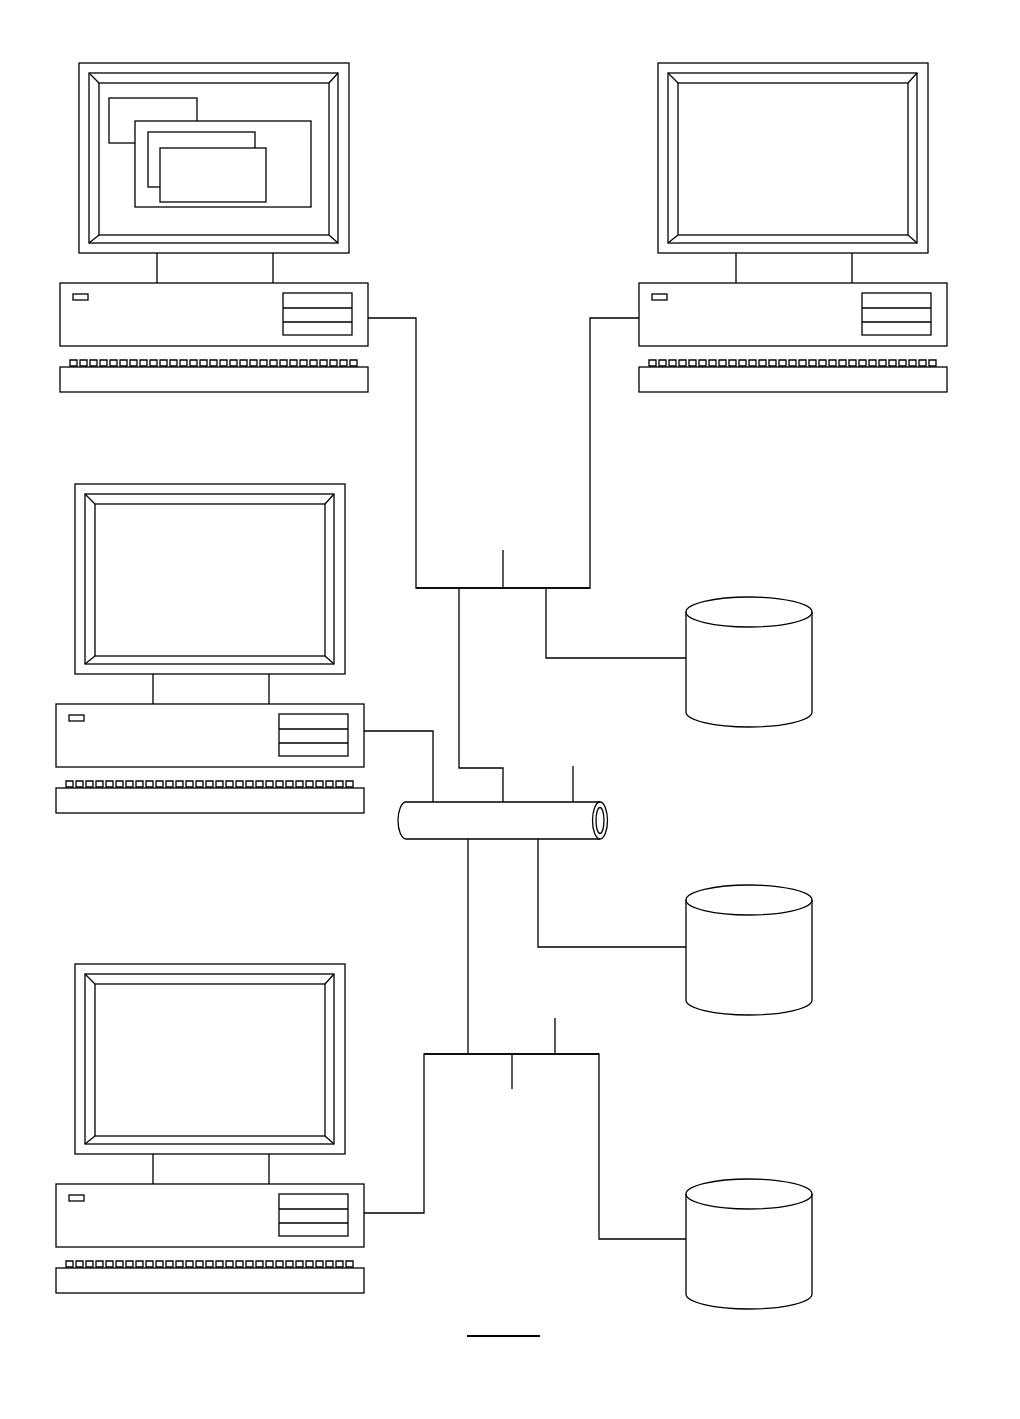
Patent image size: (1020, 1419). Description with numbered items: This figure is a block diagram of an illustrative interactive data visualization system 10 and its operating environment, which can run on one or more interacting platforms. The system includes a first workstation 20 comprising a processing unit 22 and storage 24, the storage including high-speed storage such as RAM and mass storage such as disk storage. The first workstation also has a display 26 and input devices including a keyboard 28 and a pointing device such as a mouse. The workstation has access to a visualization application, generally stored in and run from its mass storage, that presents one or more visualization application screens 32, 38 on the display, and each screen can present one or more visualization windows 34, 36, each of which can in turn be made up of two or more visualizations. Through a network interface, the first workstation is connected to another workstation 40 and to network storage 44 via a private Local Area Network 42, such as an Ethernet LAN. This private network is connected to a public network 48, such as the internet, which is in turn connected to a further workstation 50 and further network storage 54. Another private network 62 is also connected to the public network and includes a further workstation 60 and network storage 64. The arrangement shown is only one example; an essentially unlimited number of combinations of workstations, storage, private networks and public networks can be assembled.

The interactive data visualization system 10 is at (109, 1312).
The first workstation 20 is at (360, 113).
The processing unit 22 is at (333, 283).
The storage 24 is at (352, 302).
The display 26 is at (350, 208).
The keyboard 28 is at (328, 392).
The visualization application screen 32 is at (260, 121).
The visualization window 34 is at (147, 175).
The visualization window 36 is at (159, 200).
The visualization application screen 38 is at (197, 117).
The workstation 40 is at (658, 120).
The private Local Area Network 42 is at (523, 585).
The network storage 44 is at (812, 658).
The public network 48 is at (607, 817).
The workstation 50 is at (345, 553).
The network storage 54 is at (812, 945).
The workstation 60 is at (345, 1030).
The private network 62 is at (575, 1054).
The network storage 64 is at (811, 1242).